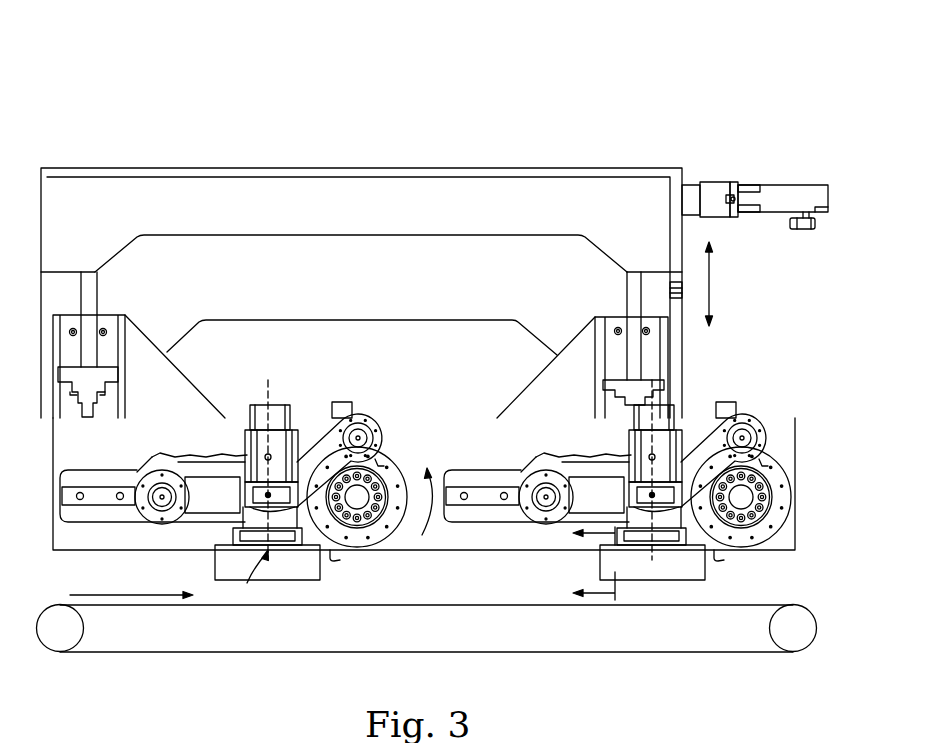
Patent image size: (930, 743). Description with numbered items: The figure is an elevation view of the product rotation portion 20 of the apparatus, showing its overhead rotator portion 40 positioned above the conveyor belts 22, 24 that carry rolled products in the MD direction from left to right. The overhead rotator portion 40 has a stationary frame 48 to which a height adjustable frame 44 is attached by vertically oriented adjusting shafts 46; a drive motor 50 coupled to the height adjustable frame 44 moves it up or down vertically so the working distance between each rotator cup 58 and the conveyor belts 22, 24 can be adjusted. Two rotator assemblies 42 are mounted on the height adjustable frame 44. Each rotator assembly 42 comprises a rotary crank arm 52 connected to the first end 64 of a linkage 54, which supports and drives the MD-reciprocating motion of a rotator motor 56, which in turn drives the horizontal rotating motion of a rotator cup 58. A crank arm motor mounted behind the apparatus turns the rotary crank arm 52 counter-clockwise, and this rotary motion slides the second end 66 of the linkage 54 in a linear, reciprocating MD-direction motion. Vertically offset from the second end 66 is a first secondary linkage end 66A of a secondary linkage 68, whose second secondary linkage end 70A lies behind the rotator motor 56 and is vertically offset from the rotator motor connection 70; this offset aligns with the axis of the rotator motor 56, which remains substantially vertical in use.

The product rotation portion 20 is at (147, 95).
The conveyor belt 22 is at (735, 604).
The conveyor belt 24 is at (427, 629).
The overhead rotator portion 40 is at (42, 332).
The rotator assembly 42 is at (366, 400).
The height adjustable frame 44 is at (65, 452).
The adjusting shaft 46 is at (90, 283).
The stationary frame 48 is at (112, 185).
The drive motor 50 is at (777, 195).
The rotary crank arm 52 is at (372, 466).
The linkage 54 is at (322, 453).
The rotator motor 56 is at (267, 433).
The rotator cup 58 is at (318, 572).
The first end of linkage 64 is at (360, 437).
The second end of linkage 66 is at (160, 492).
The first secondary linkage end 66A is at (160, 457).
The secondary linkage 68 is at (217, 455).
The rotator motor connection 70 is at (268, 495).
The second secondary linkage end 70A is at (268, 456).